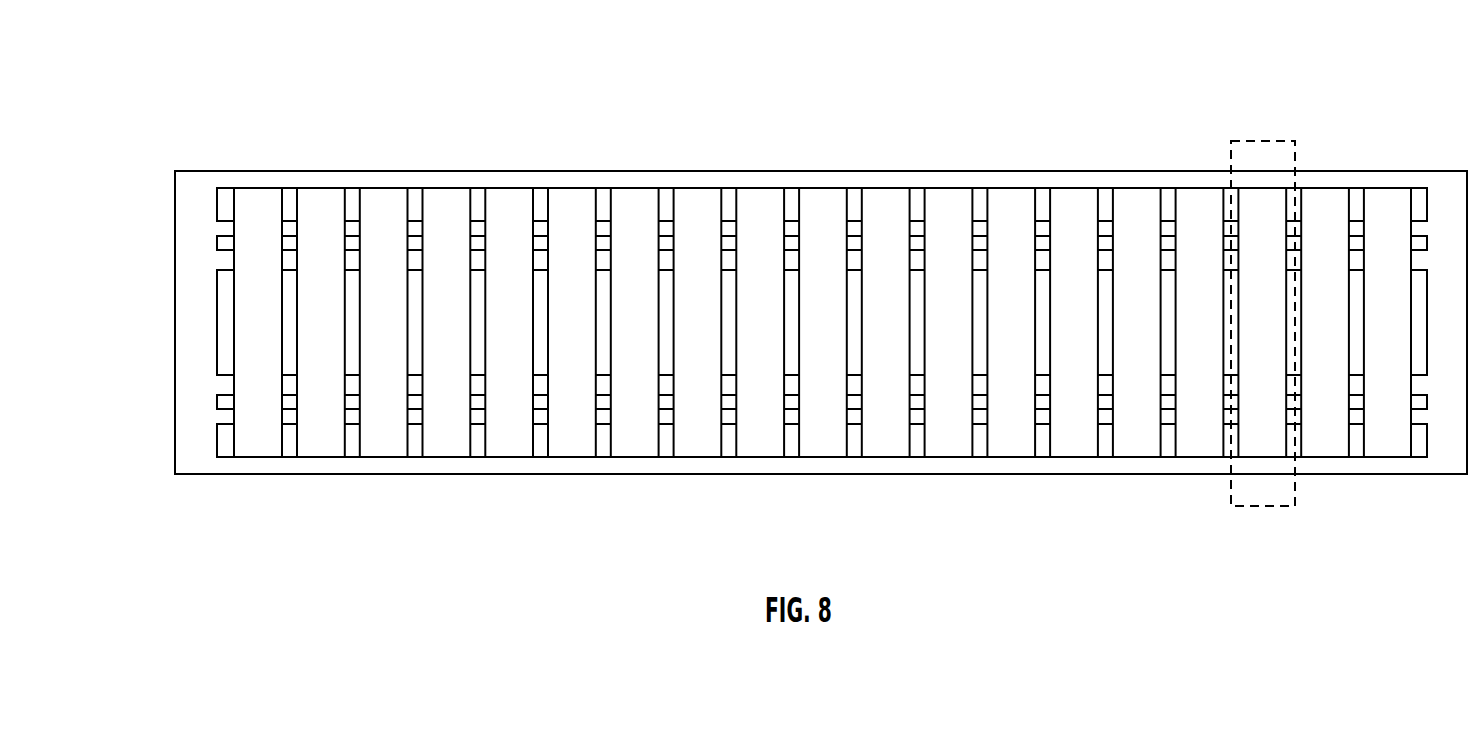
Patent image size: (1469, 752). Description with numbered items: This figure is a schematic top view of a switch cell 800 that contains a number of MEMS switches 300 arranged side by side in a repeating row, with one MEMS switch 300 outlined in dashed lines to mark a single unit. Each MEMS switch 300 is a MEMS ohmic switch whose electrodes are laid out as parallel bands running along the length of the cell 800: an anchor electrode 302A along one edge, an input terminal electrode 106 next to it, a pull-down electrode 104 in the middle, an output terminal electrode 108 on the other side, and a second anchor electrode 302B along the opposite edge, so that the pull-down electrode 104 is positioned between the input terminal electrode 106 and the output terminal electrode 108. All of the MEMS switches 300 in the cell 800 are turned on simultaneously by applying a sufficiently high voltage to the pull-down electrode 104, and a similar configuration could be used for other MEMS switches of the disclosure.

The switch cell 800 is at (1052, 107).
The anchor electrode 302A is at (217, 212).
The input terminal electrode 106 is at (217, 245).
The pull-down electrode 104 is at (217, 300).
The output terminal electrode 108 is at (217, 403).
The anchor electrode 302B is at (217, 448).
The MEMS ohmic switch 300 is at (1252, 506).